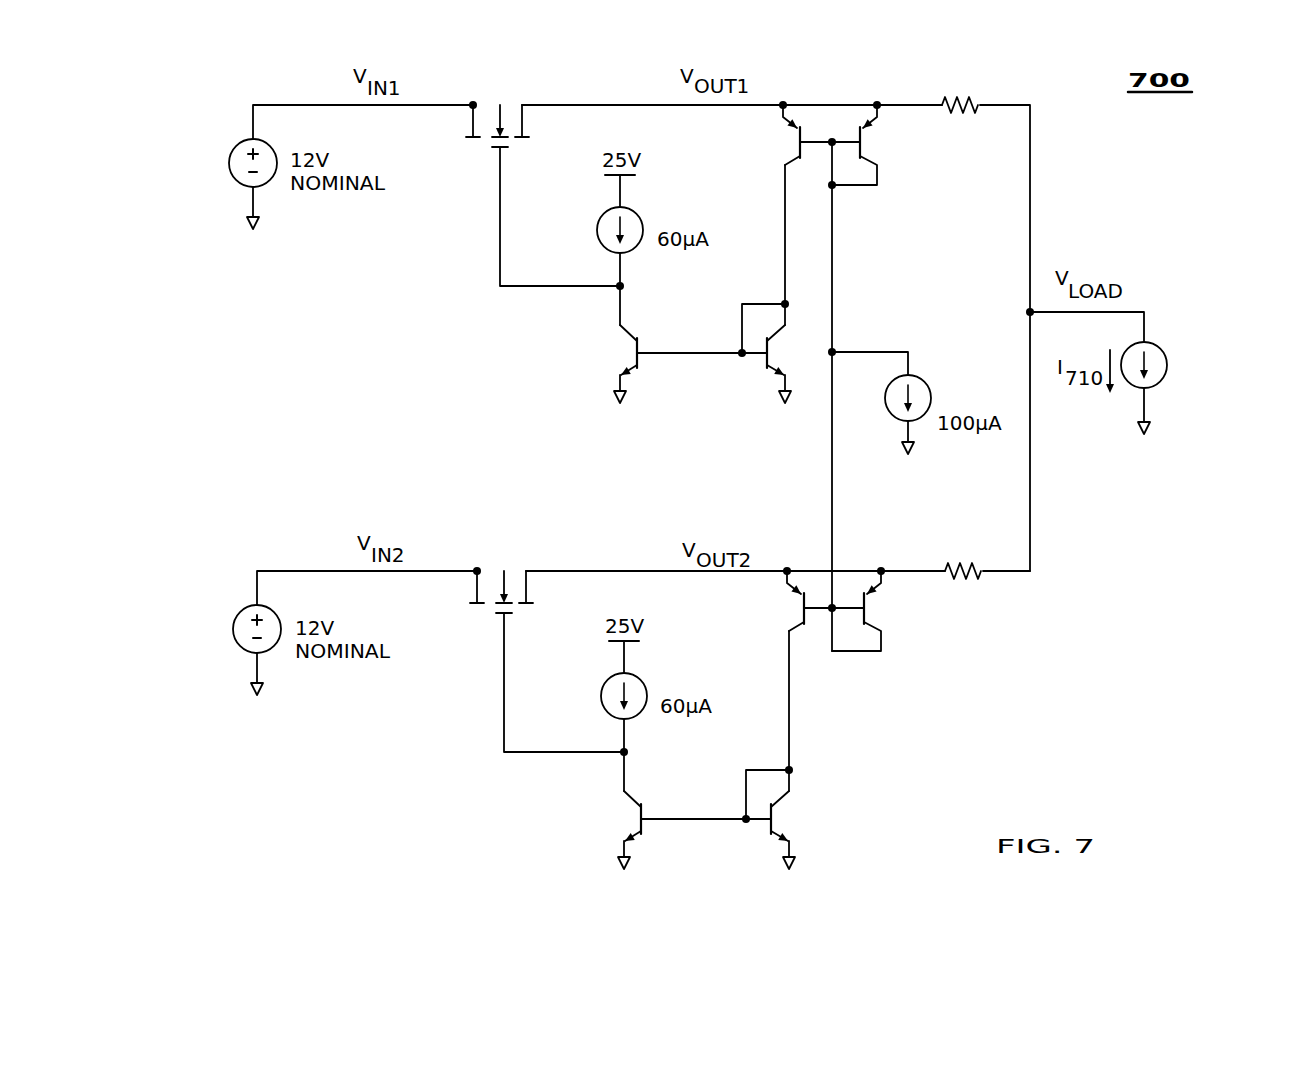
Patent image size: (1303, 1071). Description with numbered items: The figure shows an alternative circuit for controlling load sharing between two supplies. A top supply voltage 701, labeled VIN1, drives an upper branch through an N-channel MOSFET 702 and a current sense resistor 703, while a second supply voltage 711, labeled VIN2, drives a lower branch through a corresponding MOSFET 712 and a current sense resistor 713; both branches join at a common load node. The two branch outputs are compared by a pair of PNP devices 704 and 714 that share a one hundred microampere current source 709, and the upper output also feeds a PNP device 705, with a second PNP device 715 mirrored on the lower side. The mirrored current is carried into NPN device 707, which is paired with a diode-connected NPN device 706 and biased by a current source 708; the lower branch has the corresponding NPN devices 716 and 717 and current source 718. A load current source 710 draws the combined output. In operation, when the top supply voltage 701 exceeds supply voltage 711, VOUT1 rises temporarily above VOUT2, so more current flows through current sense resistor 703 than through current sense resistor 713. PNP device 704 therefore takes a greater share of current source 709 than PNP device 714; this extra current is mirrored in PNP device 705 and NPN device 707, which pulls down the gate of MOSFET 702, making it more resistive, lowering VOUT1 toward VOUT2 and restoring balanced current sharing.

The top supply voltage 701 is at (231, 162).
The N-channel MOSFET 702 is at (503, 88).
The current sense resistor 703 is at (963, 85).
The PNP device 704 is at (882, 139).
The PNP device 705 is at (784, 139).
The NPN transistor 706 is at (800, 360).
The NPN device 707 is at (610, 353).
The 60 uA current source 708 is at (597, 231).
The 100 uA current source 709 is at (931, 395).
The load current source 710 is at (1167, 365).
The supply voltage 711 is at (233, 628).
The second pass transistor (MOSFET) 712 is at (507, 554).
The current sense resistor 713 is at (967, 551).
The PNP device 714 is at (886, 606).
The PNP transistor 715 is at (787, 606).
The NPN transistor 716 is at (804, 816).
The NPN transistor 717 is at (613, 816).
The 60 uA current source 718 is at (601, 696).